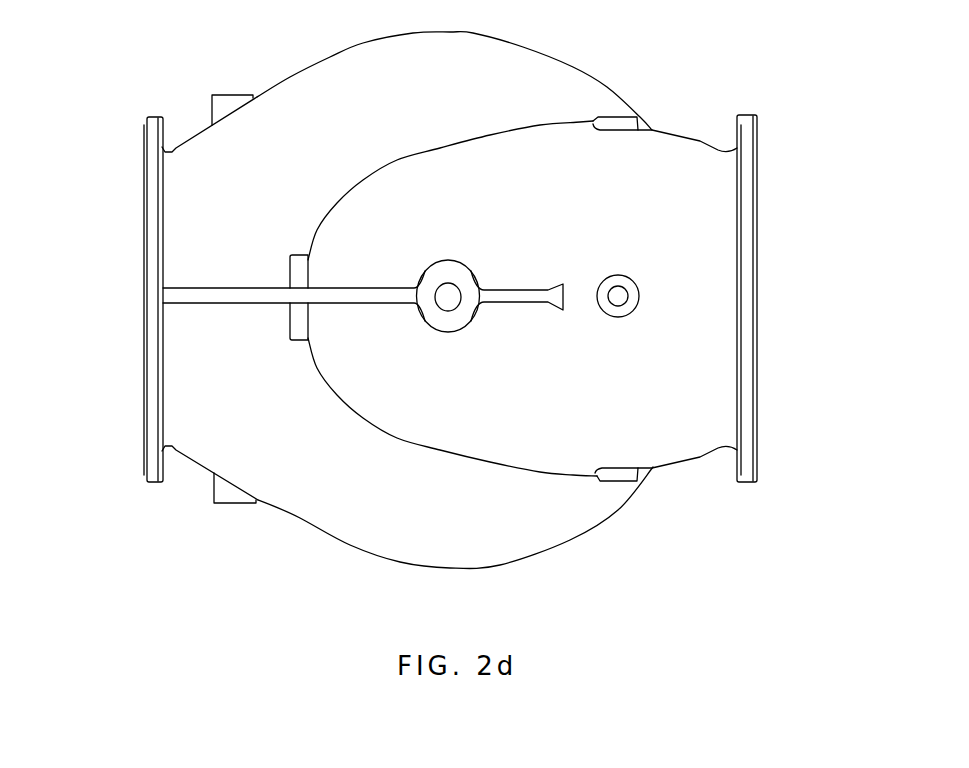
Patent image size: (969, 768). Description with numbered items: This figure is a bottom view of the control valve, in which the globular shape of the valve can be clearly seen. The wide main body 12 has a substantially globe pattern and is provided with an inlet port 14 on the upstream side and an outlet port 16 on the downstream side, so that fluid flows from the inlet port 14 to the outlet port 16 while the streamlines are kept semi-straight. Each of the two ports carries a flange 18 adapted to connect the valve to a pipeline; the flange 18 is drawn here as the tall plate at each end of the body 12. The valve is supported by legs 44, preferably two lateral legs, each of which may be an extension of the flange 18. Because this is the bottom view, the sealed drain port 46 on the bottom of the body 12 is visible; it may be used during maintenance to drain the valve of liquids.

The main body 12 is at (462, 522).
The inlet port 14 is at (765, 297).
The outlet port 16 is at (138, 294).
The flange 18 is at (758, 232).
The legs 44 is at (748, 163).
The sealed drain port 46 is at (622, 298).